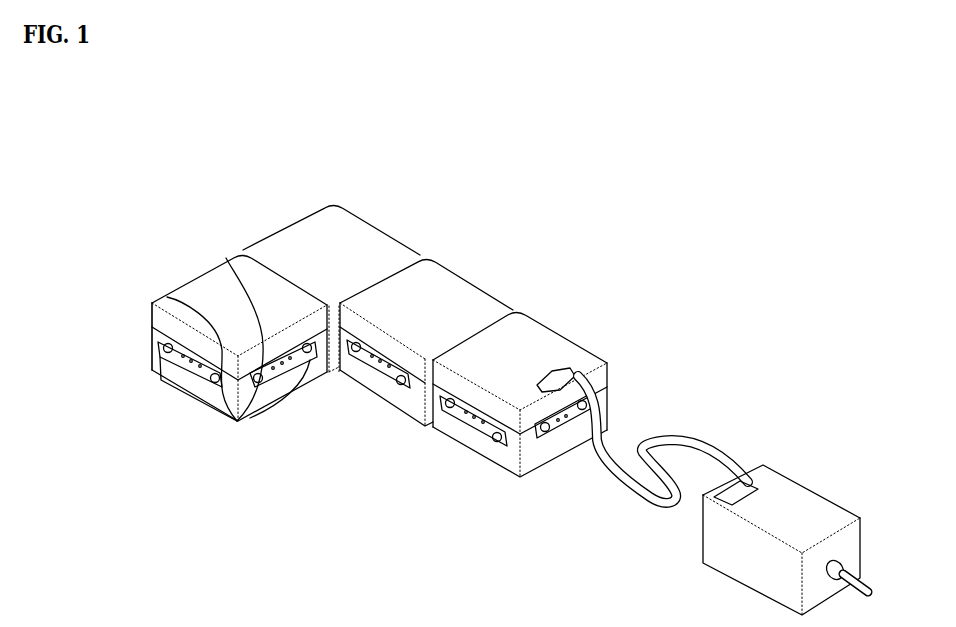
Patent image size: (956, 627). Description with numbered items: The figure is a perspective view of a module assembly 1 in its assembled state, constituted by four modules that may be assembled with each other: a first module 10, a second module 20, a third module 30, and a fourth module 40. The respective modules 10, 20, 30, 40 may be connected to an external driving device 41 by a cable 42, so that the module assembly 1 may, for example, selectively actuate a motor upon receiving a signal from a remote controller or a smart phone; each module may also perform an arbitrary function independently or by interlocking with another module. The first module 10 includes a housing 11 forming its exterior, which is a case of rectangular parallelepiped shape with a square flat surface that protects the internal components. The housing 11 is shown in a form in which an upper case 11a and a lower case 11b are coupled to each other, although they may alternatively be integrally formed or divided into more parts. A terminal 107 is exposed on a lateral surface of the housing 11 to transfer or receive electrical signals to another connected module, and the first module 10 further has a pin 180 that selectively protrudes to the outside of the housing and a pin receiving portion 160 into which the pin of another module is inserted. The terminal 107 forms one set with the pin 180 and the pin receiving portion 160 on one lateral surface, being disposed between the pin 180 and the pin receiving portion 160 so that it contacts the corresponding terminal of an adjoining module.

The module assembly 1 is at (420, 138).
The first module 10 is at (199, 260).
The housing 11 is at (98, 284).
The upper case 11a is at (148, 320).
The lower case 11b is at (148, 348).
The second module 20 is at (381, 216).
The third module 30 is at (481, 267).
The fourth module 40 is at (570, 324).
The external driving device 41 is at (818, 476).
The cable 42 is at (704, 441).
The terminal 107 is at (237, 424).
The pin receiving portion 160 is at (167, 297).
The pin 180 is at (226, 258).